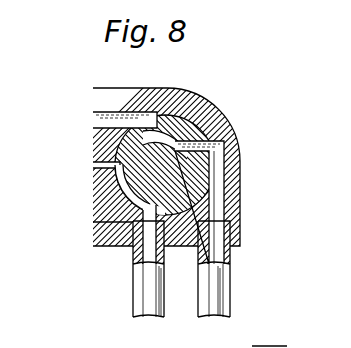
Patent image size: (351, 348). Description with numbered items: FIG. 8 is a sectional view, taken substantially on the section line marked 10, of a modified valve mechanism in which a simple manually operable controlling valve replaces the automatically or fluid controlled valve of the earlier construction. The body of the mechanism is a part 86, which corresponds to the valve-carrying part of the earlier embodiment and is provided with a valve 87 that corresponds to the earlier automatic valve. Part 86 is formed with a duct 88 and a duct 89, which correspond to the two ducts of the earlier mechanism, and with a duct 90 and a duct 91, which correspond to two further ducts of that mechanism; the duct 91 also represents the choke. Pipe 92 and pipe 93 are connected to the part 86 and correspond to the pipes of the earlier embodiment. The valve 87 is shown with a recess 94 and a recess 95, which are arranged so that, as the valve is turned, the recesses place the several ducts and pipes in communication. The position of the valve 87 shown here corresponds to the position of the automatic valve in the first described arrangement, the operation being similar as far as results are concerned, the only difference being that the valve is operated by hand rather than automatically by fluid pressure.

The part 86 is at (200, 96).
The valve 87 is at (226, 115).
The duct 88 is at (93, 170).
The duct 89 is at (93, 114).
The duct 90 is at (240, 167).
The duct 91 is at (95, 222).
The pipe 92 is at (140, 292).
The pipe 93 is at (228, 284).
The recess 94 is at (167, 113).
The recess 95 is at (95, 204).
The section line indicator 10 is at (68, 158).